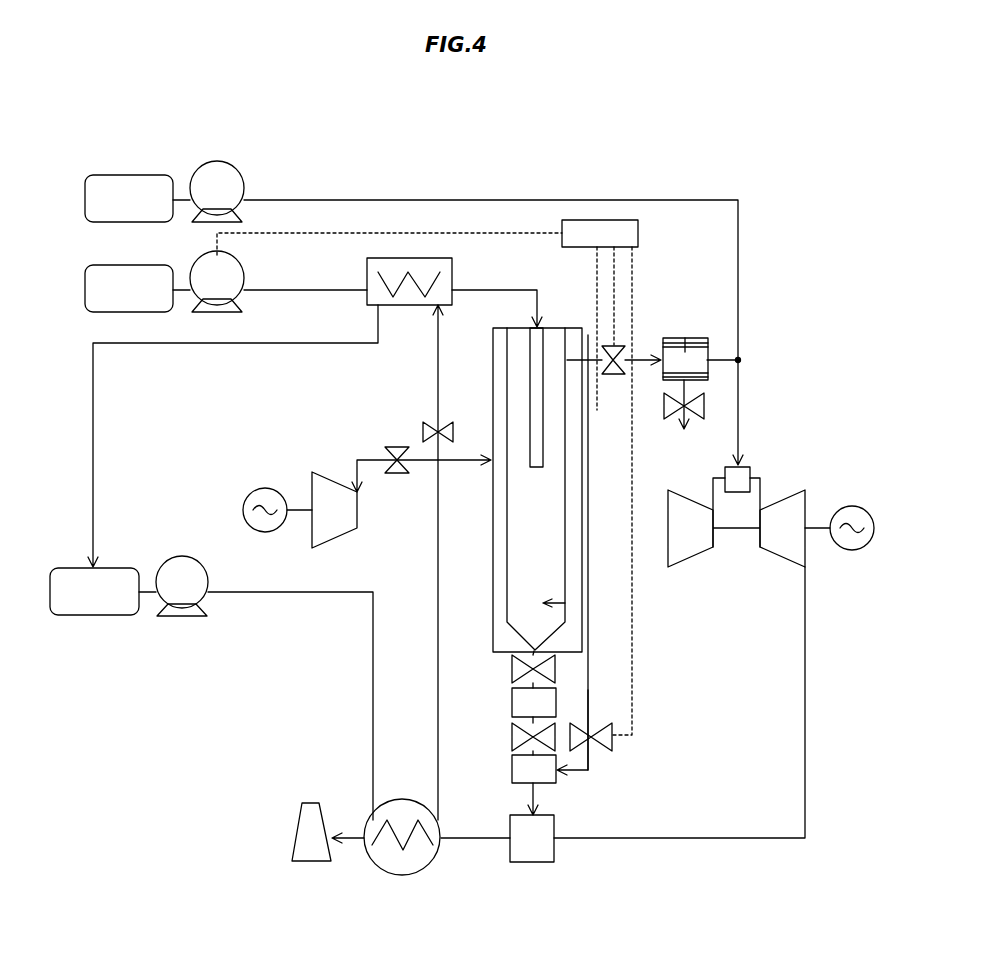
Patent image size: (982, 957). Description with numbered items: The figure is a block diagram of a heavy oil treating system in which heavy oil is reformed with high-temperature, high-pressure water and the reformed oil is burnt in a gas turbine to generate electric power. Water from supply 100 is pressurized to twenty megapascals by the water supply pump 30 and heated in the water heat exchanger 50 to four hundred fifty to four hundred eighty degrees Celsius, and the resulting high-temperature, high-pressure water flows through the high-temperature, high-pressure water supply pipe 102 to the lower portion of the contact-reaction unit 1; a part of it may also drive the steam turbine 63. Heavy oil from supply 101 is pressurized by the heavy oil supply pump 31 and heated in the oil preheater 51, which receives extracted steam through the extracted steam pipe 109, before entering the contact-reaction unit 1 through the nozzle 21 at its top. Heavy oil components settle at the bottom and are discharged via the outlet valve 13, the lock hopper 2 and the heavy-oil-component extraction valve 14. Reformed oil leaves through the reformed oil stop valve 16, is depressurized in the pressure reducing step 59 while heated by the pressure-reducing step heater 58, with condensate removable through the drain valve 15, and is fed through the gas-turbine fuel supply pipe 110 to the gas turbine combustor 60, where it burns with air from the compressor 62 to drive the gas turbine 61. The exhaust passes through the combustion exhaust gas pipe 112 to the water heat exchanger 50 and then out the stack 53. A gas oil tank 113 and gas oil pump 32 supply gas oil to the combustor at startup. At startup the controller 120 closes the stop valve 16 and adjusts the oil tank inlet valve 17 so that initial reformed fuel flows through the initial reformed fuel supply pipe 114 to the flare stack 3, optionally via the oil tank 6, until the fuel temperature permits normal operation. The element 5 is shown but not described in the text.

The contact-reaction unit 1 is at (523, 521).
The lock hopper 2 is at (512, 702).
The flare stack 3 is at (531, 862).
The reactor pressure shell 5 is at (493, 583).
The oil tank 6 is at (512, 769).
The outlet valve 13 is at (512, 668).
The heavy-oil-component extraction valve 14 is at (512, 736).
The drain valve 15 is at (672, 420).
The reformed oil stop valve 16 is at (613, 375).
The oil tank inlet valve 17 is at (612, 745).
The nozzle 21 is at (530, 388).
The water supply pump 30 is at (182, 556).
The heavy oil supply pump 31 is at (244, 274).
The gas oil pump 32 is at (244, 184).
The water heat exchanger 50 is at (403, 875).
The oil preheater 51 is at (367, 272).
The stack 53 is at (310, 861).
The pressure-reducing step heater 58 is at (667, 338).
The pressure reducing step 59 is at (688, 345).
The gas turbine combustor 60 is at (750, 467).
The gas turbine 61 is at (780, 560).
The compressor 62 is at (690, 560).
The steam turbine 63 is at (337, 482).
The water supply 100 is at (68, 568).
The heavy oil supply 101 is at (131, 266).
The high-temperature, high-pressure water supply pipe 102 is at (438, 556).
The extracted steam pipe 109 is at (433, 411).
The gas-turbine fuel supply pipe 110 is at (588, 336).
The combustion exhaust gas pipe 112 is at (808, 652).
The gas oil tank 113 is at (131, 176).
The initial reformed fuel supply pipe 114 is at (590, 678).
The controller 120 is at (638, 235).